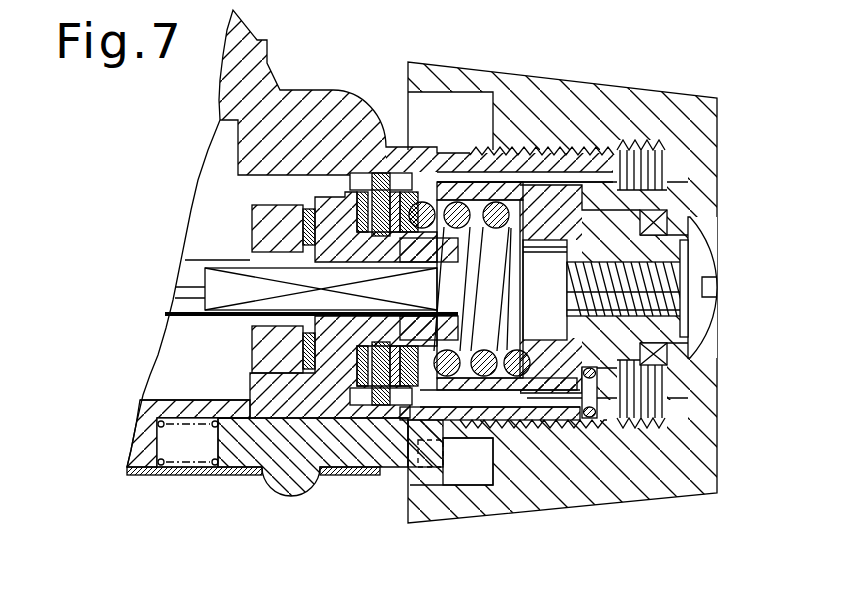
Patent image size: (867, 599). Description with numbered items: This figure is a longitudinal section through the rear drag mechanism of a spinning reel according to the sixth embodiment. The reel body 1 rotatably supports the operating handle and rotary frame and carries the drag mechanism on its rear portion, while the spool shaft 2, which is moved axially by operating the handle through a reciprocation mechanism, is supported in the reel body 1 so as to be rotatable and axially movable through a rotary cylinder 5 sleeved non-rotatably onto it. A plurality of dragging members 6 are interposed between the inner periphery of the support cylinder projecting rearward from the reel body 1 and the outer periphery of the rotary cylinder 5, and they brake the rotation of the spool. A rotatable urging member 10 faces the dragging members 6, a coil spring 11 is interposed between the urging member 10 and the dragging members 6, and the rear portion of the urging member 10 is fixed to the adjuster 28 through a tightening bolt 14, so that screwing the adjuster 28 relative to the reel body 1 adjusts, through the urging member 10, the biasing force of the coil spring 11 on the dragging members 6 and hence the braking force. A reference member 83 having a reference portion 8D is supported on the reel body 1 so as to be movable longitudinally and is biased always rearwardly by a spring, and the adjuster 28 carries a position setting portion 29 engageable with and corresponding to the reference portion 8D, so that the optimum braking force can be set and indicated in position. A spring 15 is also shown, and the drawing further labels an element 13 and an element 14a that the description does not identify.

The reel body 1 is at (275, 70).
The spool shaft 2 is at (193, 273).
The rotary cylinder 5 is at (335, 205).
The dragging members 6 is at (423, 195).
The reference portion 8D is at (432, 460).
The urging member 10 is at (625, 223).
The coil spring 11 is at (496, 204).
The seal ring 13 is at (191, 455).
The tightening bolt 14 is at (710, 260).
The flange 14a is at (223, 473).
The spring 15 is at (157, 427).
The adjuster 28 is at (613, 100).
The position setting portion 29 is at (453, 473).
The reference member 83 is at (350, 443).